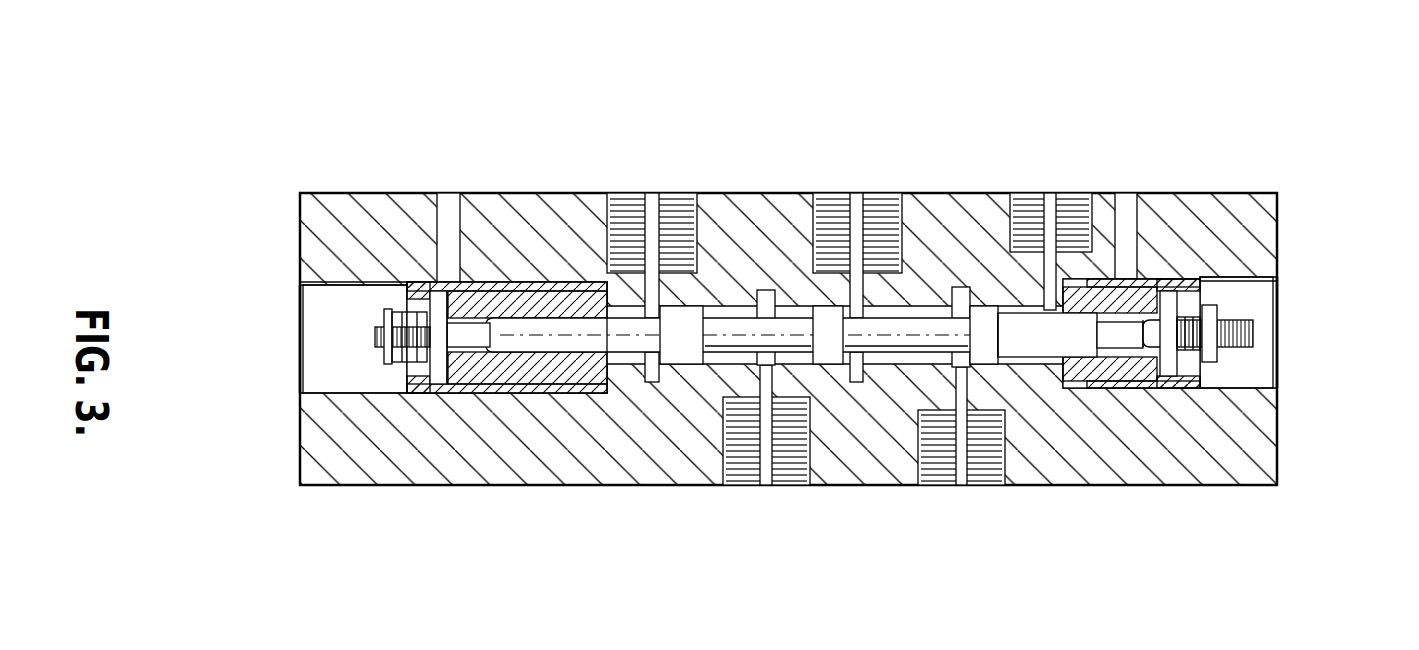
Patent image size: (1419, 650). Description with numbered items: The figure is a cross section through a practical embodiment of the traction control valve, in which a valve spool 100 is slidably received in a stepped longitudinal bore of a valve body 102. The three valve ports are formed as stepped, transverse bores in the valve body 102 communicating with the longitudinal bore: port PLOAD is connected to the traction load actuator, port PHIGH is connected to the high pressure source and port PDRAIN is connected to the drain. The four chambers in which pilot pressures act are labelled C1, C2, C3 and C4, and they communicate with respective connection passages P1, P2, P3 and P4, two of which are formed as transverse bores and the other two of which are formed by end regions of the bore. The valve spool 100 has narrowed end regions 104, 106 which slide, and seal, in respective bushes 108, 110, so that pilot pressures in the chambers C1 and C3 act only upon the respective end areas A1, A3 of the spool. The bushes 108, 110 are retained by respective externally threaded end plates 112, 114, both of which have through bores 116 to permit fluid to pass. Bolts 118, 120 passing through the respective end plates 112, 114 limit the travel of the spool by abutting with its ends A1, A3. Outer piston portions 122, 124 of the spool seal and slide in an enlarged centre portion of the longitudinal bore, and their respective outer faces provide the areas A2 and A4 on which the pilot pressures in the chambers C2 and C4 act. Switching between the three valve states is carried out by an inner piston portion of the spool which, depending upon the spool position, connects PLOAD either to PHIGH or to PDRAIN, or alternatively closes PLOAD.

The valve spool 100 is at (808, 310).
The valve body 102 is at (915, 193).
The narrowed end region 104 is at (517, 350).
The narrowed end region 106 is at (1060, 335).
The bush 108 is at (515, 283).
The bush 110 is at (1145, 365).
The externally threaded end plate 112 is at (306, 266).
The externally threaded end plate 114 is at (1256, 308).
The through bore 116 is at (388, 318).
The bolt 118 is at (395, 355).
The bolt 120 is at (1220, 348).
The outer piston portion 122 is at (680, 322).
The outer piston portion 124 is at (983, 312).
The end area A1 is at (1137, 283).
The area A2 is at (1003, 310).
The end area A3 is at (463, 283).
The area A4 is at (613, 313).
The chamber C1 is at (1112, 345).
The chamber C2 is at (1018, 362).
The chamber C3 is at (463, 350).
The chamber C4 is at (617, 350).
The connection passage P1 is at (1307, 333).
The connection passage P2 is at (1050, 162).
The connection passage P3 is at (238, 342).
The connection passage P4 is at (650, 162).
The load port PLOAD is at (857, 162).
The high pressure port PHIGH is at (765, 520).
The drain port PDRAIN is at (957, 518).